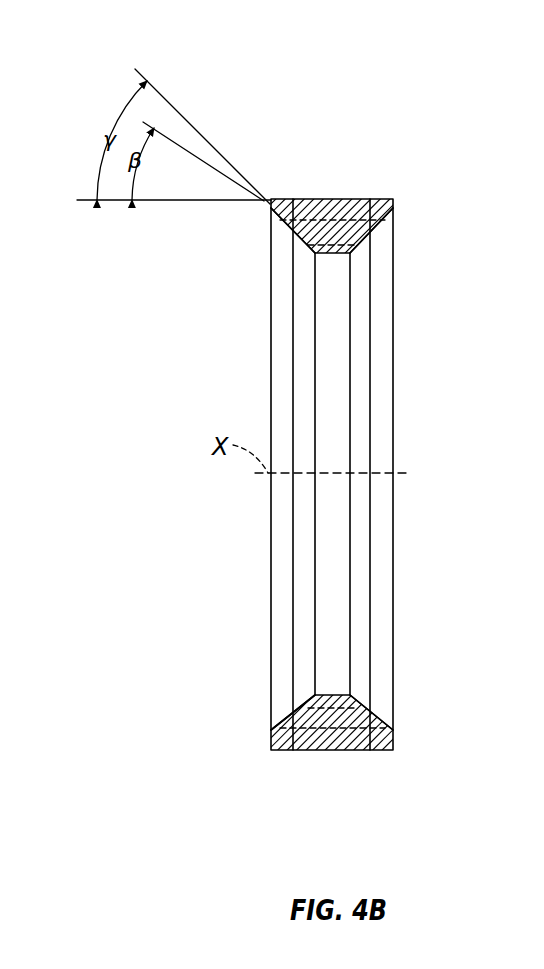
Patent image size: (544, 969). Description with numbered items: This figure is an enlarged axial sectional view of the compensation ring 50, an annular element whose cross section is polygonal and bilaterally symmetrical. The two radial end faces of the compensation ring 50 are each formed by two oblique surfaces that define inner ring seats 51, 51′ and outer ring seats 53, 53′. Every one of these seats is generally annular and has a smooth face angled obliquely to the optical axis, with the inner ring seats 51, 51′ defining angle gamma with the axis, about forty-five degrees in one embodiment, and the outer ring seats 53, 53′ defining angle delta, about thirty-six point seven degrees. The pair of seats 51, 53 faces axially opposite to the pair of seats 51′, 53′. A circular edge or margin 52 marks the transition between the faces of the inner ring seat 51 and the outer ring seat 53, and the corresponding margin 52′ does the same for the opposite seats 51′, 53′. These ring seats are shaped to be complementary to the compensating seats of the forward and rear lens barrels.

The compensation ring 50 is at (436, 448).
The inner ring seat 51 is at (312, 256).
The inner ring seat 51′ is at (353, 256).
The circular edge or margin 52 is at (293, 233).
The circular edge or margin 52′ is at (371, 233).
The outer ring seat 53 is at (298, 236).
The outer ring seat 53′ is at (366, 236).